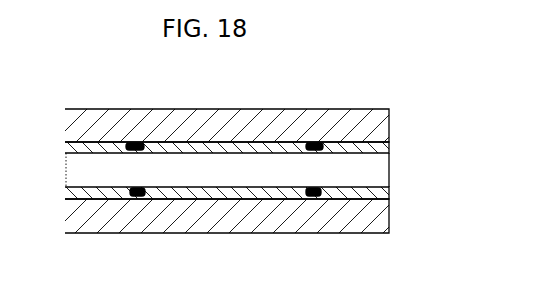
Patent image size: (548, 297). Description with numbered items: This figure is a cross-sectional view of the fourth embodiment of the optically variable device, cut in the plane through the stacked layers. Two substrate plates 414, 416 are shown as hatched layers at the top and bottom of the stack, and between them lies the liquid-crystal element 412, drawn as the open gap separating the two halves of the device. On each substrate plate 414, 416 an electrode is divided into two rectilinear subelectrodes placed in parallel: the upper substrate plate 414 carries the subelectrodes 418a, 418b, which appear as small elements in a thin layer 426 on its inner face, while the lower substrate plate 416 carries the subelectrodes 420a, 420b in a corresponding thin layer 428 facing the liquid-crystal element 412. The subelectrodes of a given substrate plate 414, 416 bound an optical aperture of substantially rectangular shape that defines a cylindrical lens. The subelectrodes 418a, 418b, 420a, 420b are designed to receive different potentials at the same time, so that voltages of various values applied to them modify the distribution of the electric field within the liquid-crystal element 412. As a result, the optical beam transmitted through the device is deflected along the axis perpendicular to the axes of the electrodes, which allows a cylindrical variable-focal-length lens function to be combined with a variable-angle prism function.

The liquid-crystal element 412 is at (358, 173).
The substrate plate 414 is at (373, 125).
The substrate plate 416 is at (169, 205).
The rectilinear subelectrode 418a is at (313, 143).
The rectilinear subelectrode 418b is at (133, 143).
The rectilinear subelectrode 420a is at (313, 199).
The rectilinear subelectrode 420b is at (137, 190).
The upper electrode layer 426 is at (233, 148).
The lower electrode layer 428 is at (233, 190).